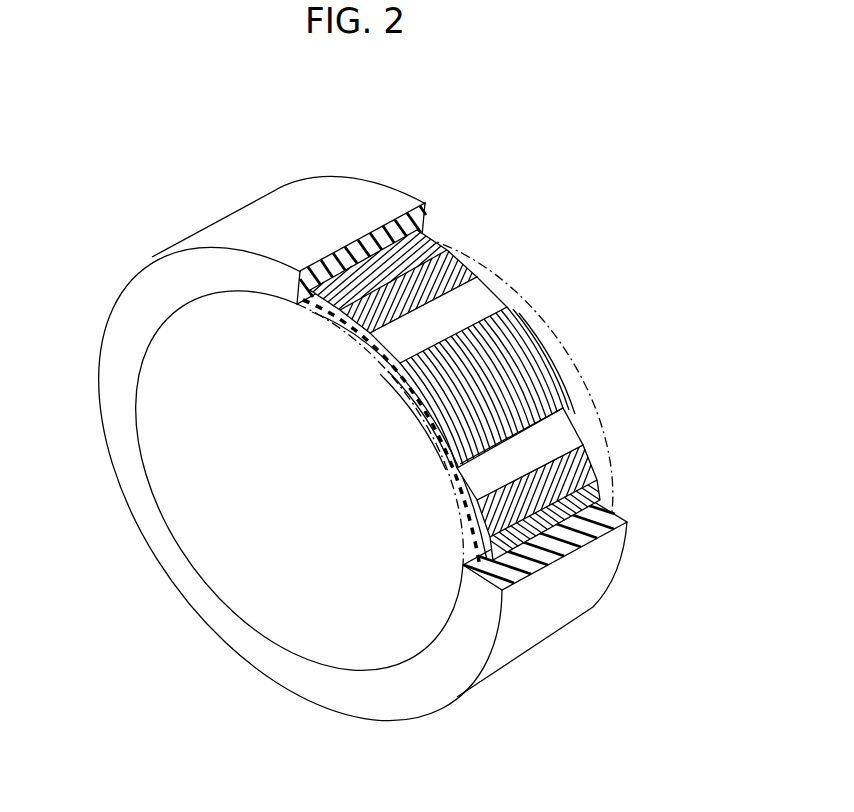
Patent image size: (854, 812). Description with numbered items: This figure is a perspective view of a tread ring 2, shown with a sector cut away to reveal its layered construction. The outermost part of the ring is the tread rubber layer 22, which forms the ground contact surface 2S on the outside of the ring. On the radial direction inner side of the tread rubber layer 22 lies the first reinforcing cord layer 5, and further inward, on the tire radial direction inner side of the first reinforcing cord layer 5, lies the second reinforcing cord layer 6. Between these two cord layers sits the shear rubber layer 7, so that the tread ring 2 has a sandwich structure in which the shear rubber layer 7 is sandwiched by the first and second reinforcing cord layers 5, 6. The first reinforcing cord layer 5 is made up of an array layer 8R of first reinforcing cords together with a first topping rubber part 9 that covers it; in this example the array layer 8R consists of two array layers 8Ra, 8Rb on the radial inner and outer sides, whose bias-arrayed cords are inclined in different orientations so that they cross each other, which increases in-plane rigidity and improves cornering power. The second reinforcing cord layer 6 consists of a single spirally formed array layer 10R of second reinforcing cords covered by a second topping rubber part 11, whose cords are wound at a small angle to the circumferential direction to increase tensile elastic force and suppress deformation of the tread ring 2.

The tread ring 2 is at (412, 178).
The ground contact surface 2S is at (548, 613).
The tread rubber layer 22 is at (597, 527).
The first reinforcing cord layer 5 is at (760, 357).
The second reinforcing cord layer 6 is at (672, 273).
The shear rubber layer 7 is at (566, 428).
The array layer 8R is at (714, 345).
The array layer 8Ra is at (598, 512).
The array layer 8Rb is at (600, 548).
The first topping rubber part 9 is at (585, 516).
The array layer 10R is at (528, 398).
The second topping rubber part 11 is at (522, 345).